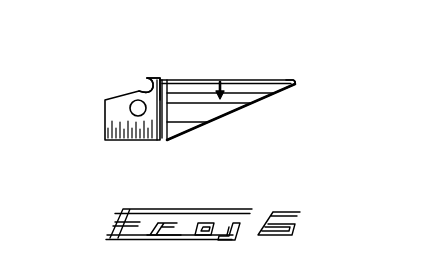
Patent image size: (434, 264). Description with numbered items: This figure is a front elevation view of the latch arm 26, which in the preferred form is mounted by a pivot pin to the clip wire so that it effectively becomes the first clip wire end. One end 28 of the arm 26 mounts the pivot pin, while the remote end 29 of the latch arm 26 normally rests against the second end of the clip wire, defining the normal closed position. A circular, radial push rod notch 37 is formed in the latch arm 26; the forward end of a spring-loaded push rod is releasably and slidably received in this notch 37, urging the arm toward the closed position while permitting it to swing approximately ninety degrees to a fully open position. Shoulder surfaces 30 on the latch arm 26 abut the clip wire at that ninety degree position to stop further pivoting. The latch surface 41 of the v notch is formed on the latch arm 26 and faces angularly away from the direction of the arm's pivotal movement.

The latch arm 26 is at (222, 79).
The end of the arm 28 is at (122, 141).
The remote end 29 is at (295, 88).
The shoulder surfaces 30 is at (158, 78).
The circular notch 37 is at (143, 88).
The latch surface 41 is at (227, 117).